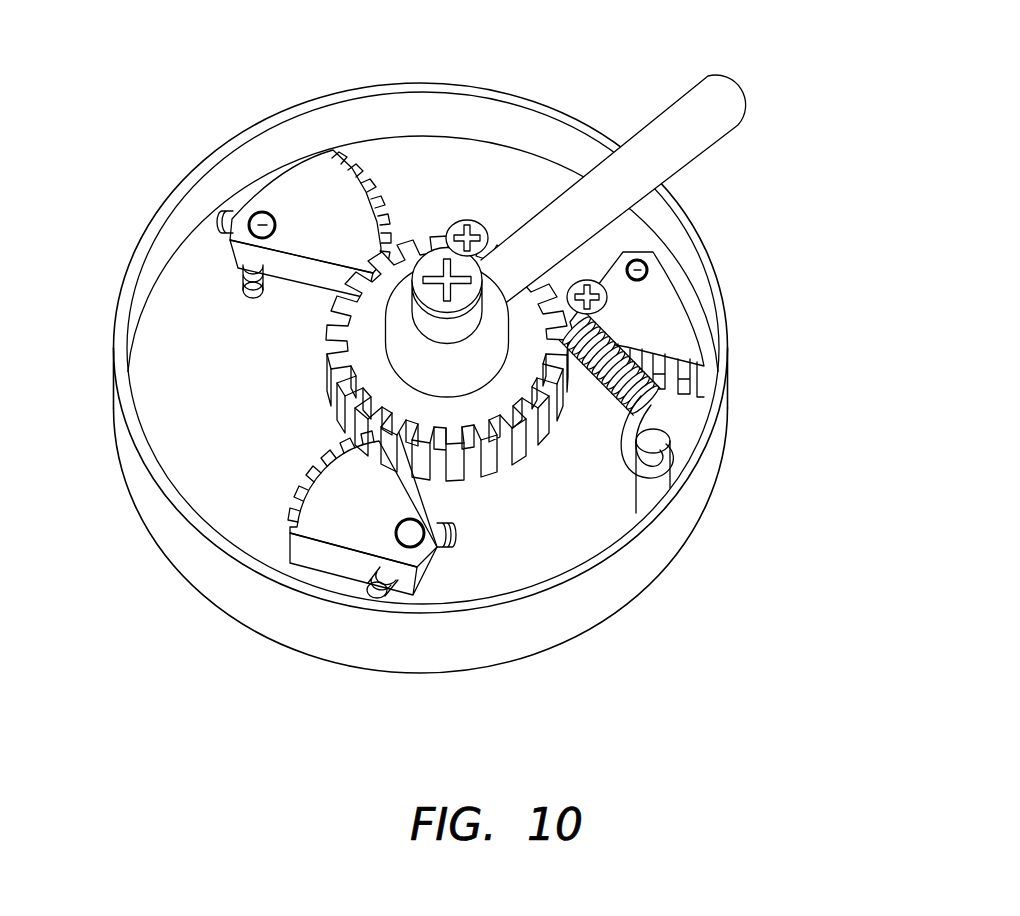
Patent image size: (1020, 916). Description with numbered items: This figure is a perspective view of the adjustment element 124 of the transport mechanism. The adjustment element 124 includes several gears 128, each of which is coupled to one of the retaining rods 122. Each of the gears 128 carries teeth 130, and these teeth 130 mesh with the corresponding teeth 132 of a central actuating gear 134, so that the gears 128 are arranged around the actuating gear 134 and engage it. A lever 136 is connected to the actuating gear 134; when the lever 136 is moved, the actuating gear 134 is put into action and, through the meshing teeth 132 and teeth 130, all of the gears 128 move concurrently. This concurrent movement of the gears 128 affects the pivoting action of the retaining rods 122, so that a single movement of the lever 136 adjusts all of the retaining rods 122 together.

The retaining rods 122 is at (233, 218).
The adjustment element 124 is at (838, 565).
The gears 128 is at (303, 202).
The teeth 130 is at (343, 170).
The teeth 132 is at (320, 369).
The actuating gear 134 is at (470, 420).
The lever 136 is at (735, 90).